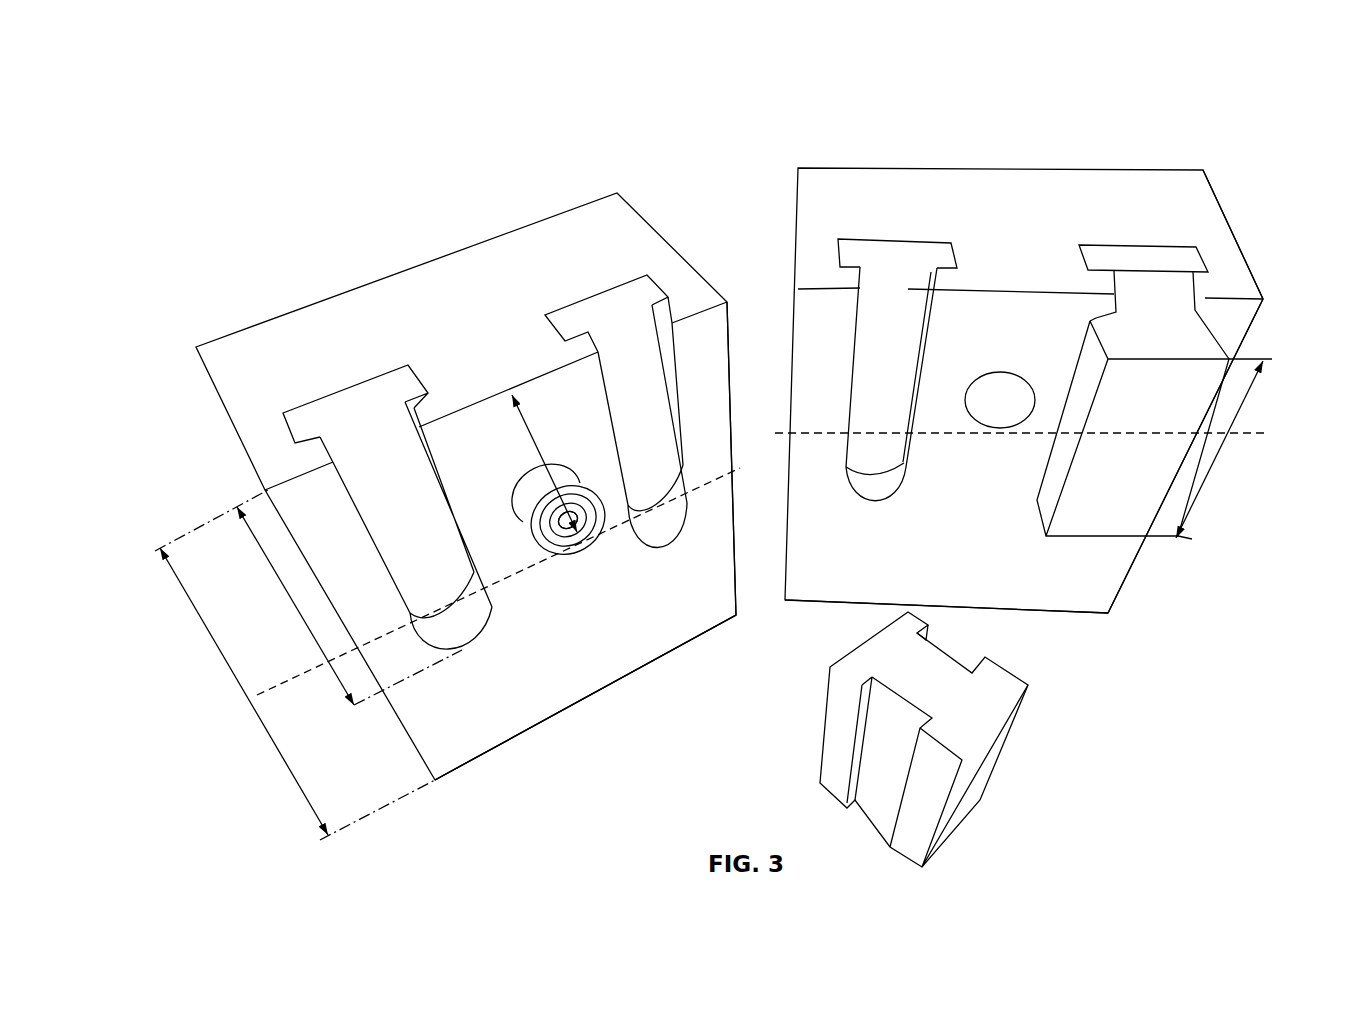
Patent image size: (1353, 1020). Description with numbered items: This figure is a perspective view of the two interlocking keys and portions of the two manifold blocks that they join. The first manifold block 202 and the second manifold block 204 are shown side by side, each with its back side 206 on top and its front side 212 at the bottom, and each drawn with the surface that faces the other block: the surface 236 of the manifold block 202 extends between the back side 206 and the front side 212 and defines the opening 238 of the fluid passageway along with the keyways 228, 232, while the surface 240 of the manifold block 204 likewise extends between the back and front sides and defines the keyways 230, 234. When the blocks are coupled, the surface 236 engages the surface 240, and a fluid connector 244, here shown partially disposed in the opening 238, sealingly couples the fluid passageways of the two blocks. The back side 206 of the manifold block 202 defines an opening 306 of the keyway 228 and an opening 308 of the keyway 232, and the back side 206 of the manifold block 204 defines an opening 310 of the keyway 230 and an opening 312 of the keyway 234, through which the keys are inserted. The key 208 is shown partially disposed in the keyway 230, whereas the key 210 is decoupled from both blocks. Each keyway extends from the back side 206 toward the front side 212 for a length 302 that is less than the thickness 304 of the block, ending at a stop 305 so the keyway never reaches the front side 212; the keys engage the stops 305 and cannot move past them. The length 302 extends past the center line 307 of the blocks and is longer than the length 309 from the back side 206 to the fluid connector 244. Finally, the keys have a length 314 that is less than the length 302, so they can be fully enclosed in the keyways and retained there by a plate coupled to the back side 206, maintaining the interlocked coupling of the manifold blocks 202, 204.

The manifold block 202 is at (262, 146).
The manifold block 204 is at (1224, 108).
The back side 206 is at (527, 237).
The interlocking key 208 is at (1205, 338).
The interlocking key 210 is at (983, 770).
The front side 212 is at (493, 745).
The keyway 228 is at (383, 412).
The keyway 230 is at (1138, 268).
The keyway 232 is at (625, 310).
The keyway 234 is at (905, 262).
The surface 236 is at (705, 618).
The opening 238 is at (552, 568).
The surface 240 is at (1108, 575).
The fluid connector 244 is at (590, 542).
The length 302 is at (303, 621).
The thickness 304 is at (252, 716).
The stop 305 is at (460, 632).
The opening 306 is at (307, 393).
The center line 307 is at (285, 680).
The opening 308 is at (615, 280).
The length 309 is at (528, 426).
The opening 310 is at (1188, 238).
The opening 312 is at (882, 236).
The length 314 is at (1222, 450).